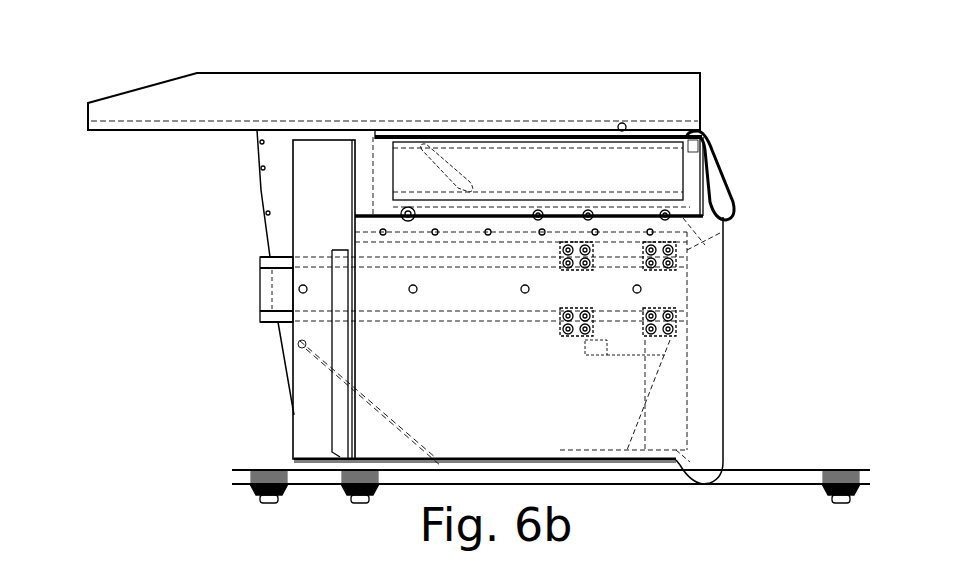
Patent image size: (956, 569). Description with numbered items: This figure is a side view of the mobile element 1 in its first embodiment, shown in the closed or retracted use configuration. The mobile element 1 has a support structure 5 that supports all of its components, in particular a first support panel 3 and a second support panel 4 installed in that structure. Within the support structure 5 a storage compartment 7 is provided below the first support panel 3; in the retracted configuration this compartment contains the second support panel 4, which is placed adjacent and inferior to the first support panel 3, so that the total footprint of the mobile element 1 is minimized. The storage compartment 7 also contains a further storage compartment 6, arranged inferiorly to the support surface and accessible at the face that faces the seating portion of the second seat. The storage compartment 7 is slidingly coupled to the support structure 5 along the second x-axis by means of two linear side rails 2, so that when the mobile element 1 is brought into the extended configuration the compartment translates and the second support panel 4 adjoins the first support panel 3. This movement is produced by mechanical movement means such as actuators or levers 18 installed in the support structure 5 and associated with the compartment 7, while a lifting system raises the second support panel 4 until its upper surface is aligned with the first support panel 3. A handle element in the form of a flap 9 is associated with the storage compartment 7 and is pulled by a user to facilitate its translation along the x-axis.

The mobile element 1 is at (705, 54).
The linear side rails 2 is at (503, 315).
The first support panel 3 is at (578, 82).
The second support panel 4 is at (648, 136).
The support structure 5 is at (320, 428).
The storage compartment 6 is at (708, 373).
The storage compartment 7 is at (702, 203).
The flap 9 is at (727, 170).
The levers 18 is at (377, 408).